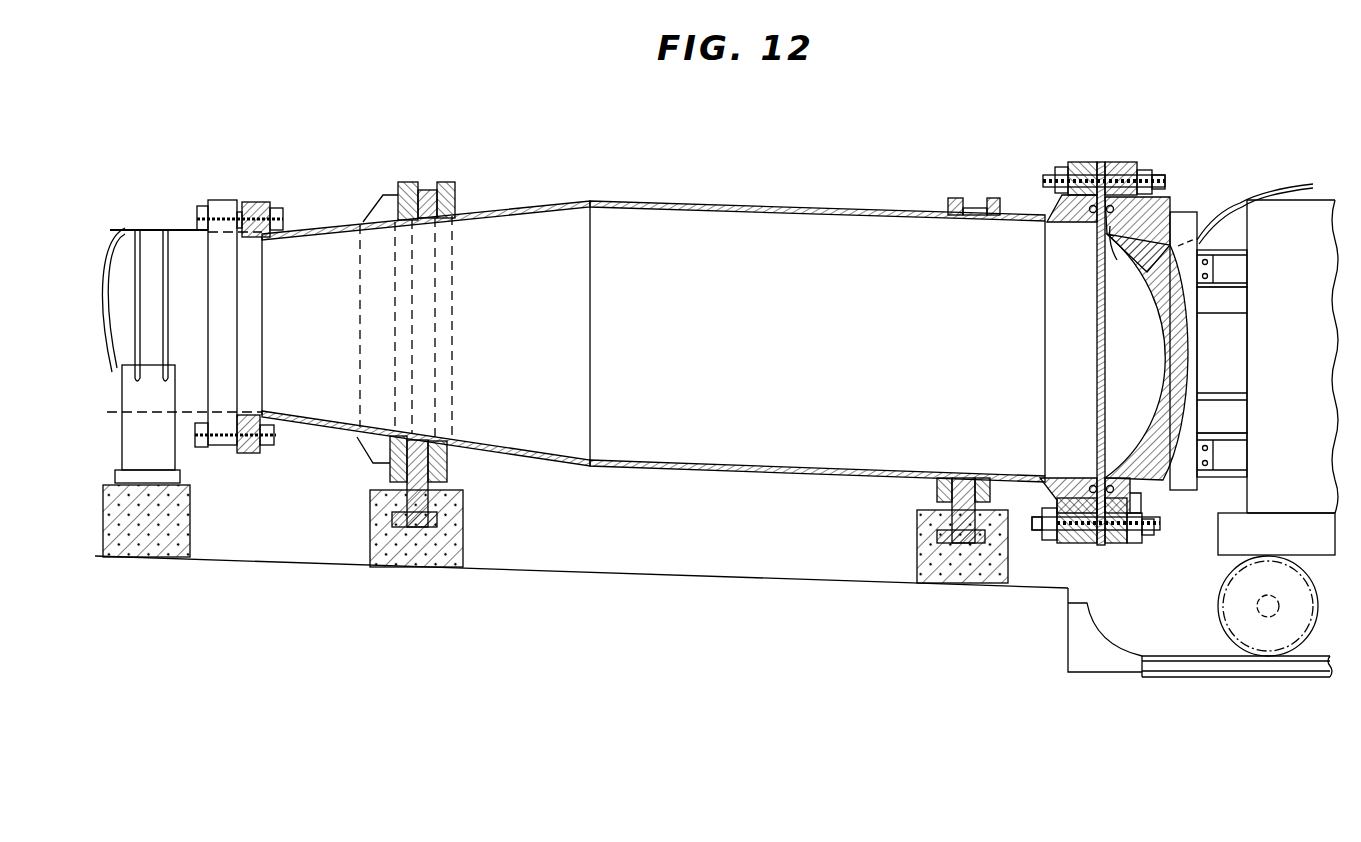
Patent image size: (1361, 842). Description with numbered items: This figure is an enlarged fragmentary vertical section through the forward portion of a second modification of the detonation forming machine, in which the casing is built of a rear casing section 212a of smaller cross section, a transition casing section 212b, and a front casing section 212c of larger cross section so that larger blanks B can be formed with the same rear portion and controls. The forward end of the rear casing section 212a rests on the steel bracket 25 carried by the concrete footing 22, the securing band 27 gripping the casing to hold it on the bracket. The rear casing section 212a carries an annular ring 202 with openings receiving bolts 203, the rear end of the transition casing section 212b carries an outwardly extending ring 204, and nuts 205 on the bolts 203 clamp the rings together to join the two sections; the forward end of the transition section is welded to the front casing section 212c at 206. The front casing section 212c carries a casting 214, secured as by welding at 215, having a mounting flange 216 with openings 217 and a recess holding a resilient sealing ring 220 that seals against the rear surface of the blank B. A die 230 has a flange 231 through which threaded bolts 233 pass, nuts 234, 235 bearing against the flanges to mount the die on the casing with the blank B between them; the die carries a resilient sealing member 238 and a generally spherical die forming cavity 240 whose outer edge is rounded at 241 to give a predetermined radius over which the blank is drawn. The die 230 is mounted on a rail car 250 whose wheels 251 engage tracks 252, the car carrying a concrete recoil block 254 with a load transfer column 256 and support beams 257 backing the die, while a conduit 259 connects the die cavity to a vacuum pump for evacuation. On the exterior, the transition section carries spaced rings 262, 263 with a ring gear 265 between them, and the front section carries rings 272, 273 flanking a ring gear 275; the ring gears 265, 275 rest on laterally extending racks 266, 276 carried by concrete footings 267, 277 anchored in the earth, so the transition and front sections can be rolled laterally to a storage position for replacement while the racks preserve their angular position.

The concrete footing 22 is at (165, 547).
The steel bracket 25 is at (165, 458).
The securing band 27 is at (152, 240).
The annular ring 202 is at (228, 212).
The bolts 203 is at (257, 203).
The outwardly extending ring 204 is at (250, 455).
The nuts 205 is at (279, 206).
The weld 206 is at (593, 202).
The rear casing section 212a is at (187, 228).
The transition casing section 212b is at (562, 203).
The front casing section 212c is at (748, 205).
The casting 214 is at (1046, 207).
The weld 215 is at (1047, 478).
The mounting flange 216 is at (1088, 166).
The openings 217 is at (1080, 173).
The resilient sealing ring 220 is at (1093, 214).
The die 230 is at (1150, 230).
The flange 231 is at (1121, 168).
The threaded bolts 233 is at (1097, 170).
The nut 234 is at (1062, 170).
The nut 235 is at (1152, 173).
The resilient sealing member 238 is at (1131, 497).
The die forming cavity 240 is at (1160, 342).
The rounded outer edge 241 is at (1128, 255).
The rail car 250 is at (1214, 562).
The wheels 251 is at (1228, 610).
The tracks 252 is at (1223, 668).
The concrete recoil block 254 is at (1313, 262).
The load transfer column 256 is at (1237, 350).
The support beams 257 is at (1243, 272).
The conduit 259 is at (1232, 204).
The ring 262 is at (398, 188).
The ring 263 is at (472, 178).
The ring gear 265 is at (427, 198).
The rack 266 is at (430, 489).
The concrete footing 267 is at (453, 538).
The ring 272 is at (950, 200).
The ring 273 is at (995, 200).
The ring gear 275 is at (970, 210).
The rack 276 is at (948, 502).
The concrete footing 277 is at (932, 562).
The blank B is at (1094, 353).